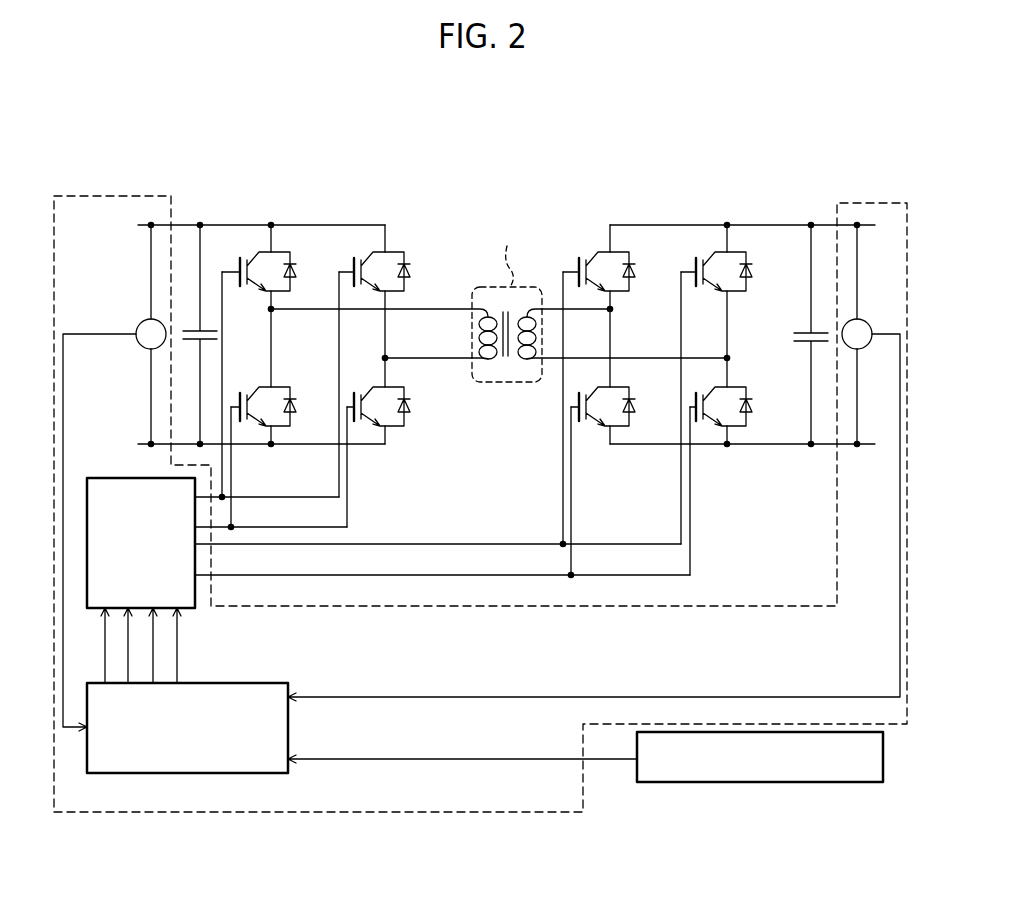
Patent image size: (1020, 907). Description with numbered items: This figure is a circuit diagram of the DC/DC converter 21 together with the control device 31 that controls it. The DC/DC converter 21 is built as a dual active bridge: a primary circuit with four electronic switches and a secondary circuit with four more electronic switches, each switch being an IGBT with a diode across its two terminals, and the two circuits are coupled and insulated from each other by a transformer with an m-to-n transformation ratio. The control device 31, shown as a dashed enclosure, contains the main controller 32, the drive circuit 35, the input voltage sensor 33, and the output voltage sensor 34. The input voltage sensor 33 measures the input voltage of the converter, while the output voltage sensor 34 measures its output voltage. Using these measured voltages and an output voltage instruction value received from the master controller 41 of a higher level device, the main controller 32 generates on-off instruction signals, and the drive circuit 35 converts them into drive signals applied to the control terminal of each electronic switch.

The DC/DC converter 21 is at (713, 163).
The control device 31 is at (107, 196).
The main controller 32 is at (193, 774).
The input voltage sensor 33 is at (150, 320).
The output voltage sensor 34 is at (862, 320).
The drive circuit 35 is at (118, 478).
The master controller 41 is at (728, 783).